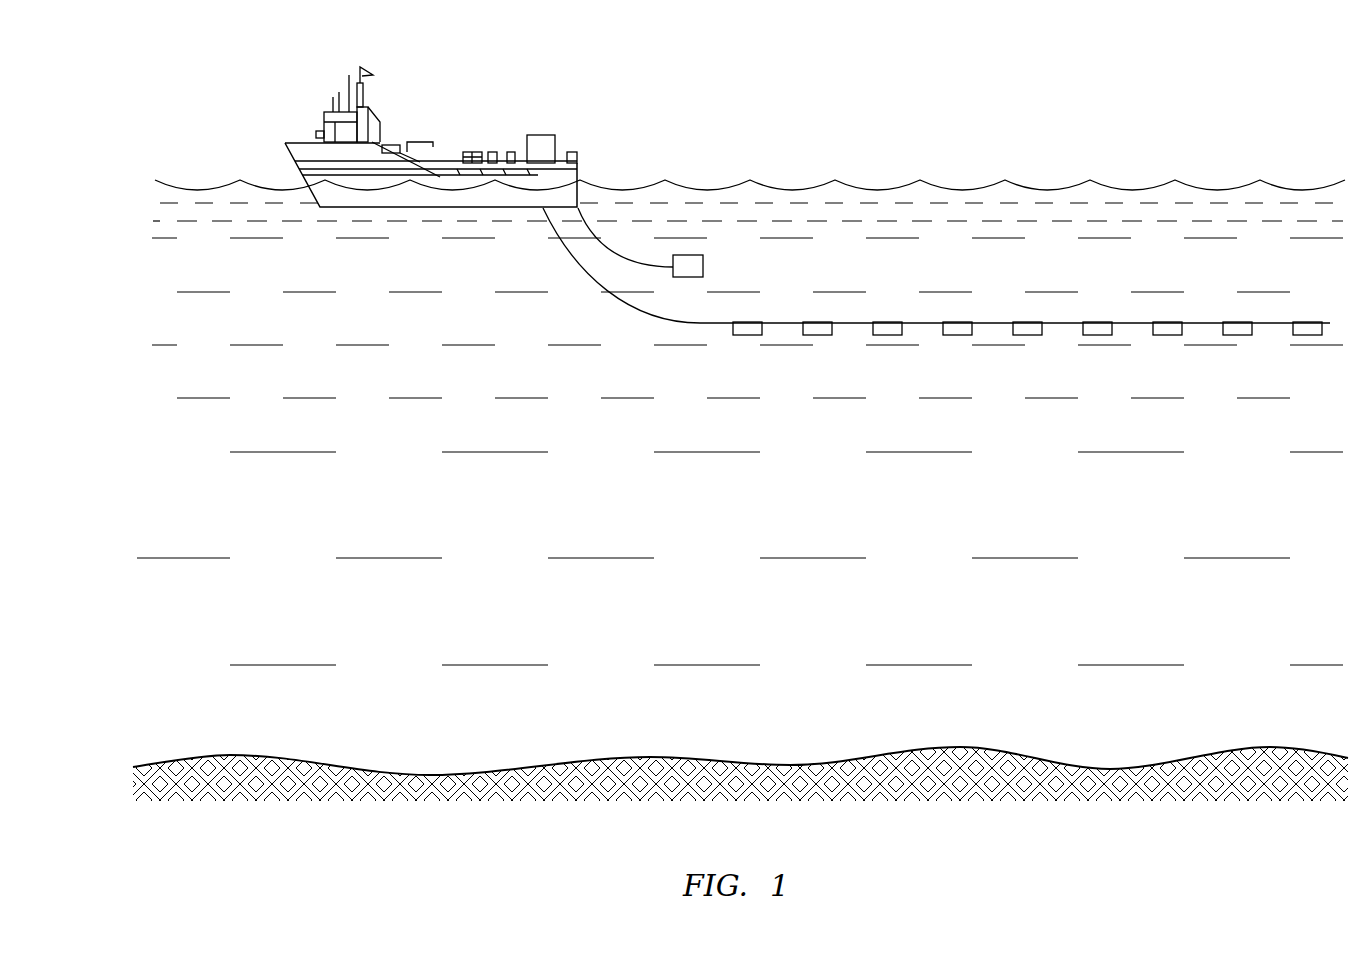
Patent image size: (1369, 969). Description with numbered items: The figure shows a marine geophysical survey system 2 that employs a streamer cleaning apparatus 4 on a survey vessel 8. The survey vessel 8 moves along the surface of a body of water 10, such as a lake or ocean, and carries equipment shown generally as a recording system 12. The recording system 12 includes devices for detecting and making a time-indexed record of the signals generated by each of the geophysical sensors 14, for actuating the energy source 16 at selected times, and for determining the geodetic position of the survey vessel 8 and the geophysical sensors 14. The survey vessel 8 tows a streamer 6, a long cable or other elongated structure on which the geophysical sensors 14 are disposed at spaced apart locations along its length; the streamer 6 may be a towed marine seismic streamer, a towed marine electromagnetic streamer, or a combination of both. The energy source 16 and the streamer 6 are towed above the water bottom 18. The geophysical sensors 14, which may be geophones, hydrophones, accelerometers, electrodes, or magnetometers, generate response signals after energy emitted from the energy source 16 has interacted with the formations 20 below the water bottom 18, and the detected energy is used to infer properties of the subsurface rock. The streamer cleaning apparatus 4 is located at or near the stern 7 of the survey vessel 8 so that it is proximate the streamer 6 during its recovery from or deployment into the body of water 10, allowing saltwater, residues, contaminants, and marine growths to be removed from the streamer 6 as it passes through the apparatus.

The marine geophysical survey system 2 is at (313, 228).
The streamer cleaning apparatus 4 is at (570, 152).
The streamer 6 is at (985, 322).
The stern 7 is at (578, 172).
The survey vessel 8 is at (325, 110).
The body of water 10 is at (333, 441).
The recording system 12 is at (533, 135).
The geophysical sensors 14 is at (873, 334).
The energy source 16 is at (703, 265).
The water bottom 18 is at (1183, 760).
The formations 20 is at (1236, 843).